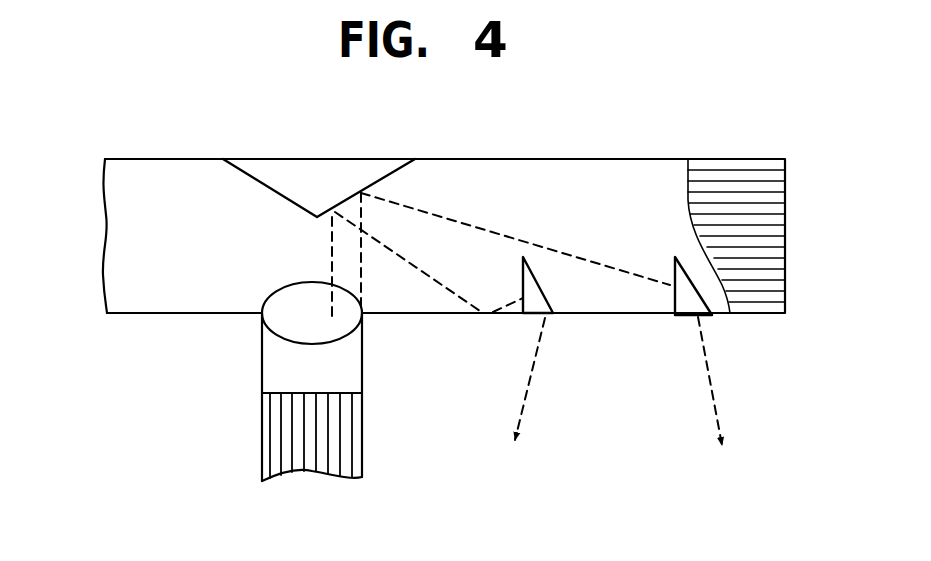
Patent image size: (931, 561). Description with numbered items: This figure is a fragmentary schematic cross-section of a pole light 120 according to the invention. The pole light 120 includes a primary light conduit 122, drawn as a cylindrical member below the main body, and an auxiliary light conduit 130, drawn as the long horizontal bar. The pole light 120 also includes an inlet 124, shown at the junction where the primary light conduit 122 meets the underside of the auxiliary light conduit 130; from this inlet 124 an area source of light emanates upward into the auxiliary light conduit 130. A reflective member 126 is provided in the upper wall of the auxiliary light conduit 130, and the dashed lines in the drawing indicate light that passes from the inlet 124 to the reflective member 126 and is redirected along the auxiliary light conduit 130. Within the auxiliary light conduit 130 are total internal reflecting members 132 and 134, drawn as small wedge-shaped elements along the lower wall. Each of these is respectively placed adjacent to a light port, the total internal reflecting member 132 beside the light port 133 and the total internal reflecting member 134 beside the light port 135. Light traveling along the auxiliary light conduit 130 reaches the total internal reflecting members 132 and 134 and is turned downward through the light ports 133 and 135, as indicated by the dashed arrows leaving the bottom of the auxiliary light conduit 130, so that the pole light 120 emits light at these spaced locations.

The pole light 120 is at (290, 385).
The primary light conduit 122 is at (362, 431).
The inlet 124 is at (285, 312).
The reflective member 126 is at (253, 180).
The auxiliary light conduit 130 is at (612, 187).
The total internal reflecting member 132 is at (537, 316).
The light port 133 is at (532, 296).
The total internal reflecting member 134 is at (683, 300).
The light port 135 is at (689, 316).